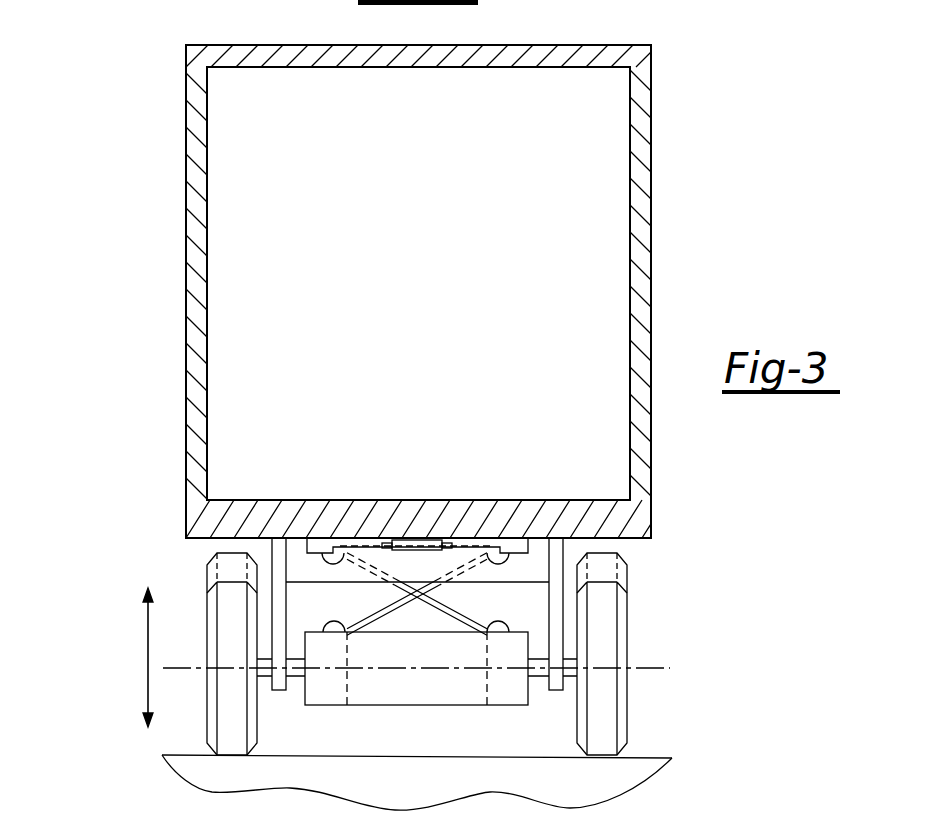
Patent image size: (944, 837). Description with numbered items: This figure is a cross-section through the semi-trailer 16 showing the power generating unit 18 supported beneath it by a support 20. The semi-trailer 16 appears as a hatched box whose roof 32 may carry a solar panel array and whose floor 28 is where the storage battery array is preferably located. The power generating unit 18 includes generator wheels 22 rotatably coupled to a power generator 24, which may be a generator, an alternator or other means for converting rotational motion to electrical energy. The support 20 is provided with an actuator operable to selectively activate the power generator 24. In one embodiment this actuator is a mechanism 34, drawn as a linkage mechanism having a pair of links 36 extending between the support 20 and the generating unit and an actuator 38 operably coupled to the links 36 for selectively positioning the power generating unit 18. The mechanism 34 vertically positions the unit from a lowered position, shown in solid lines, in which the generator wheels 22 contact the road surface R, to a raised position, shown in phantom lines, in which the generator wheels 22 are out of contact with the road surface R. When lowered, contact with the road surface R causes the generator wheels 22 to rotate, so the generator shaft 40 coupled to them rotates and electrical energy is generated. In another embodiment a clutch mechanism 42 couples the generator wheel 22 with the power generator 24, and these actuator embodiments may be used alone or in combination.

The semi-trailer 16 is at (478, 269).
The power generating unit 18 is at (441, 600).
The support 20 is at (272, 542).
The generator wheel 22 is at (207, 686).
The power generator 24 is at (415, 680).
The floor 28 is at (268, 510).
The roof 32 is at (587, 62).
The mechanism 34 is at (472, 602).
The links 36 is at (368, 613).
The actuator 38 is at (421, 540).
The generator shaft 40 is at (296, 678).
The clutch mechanism 42 is at (325, 698).
The road surface R is at (650, 757).